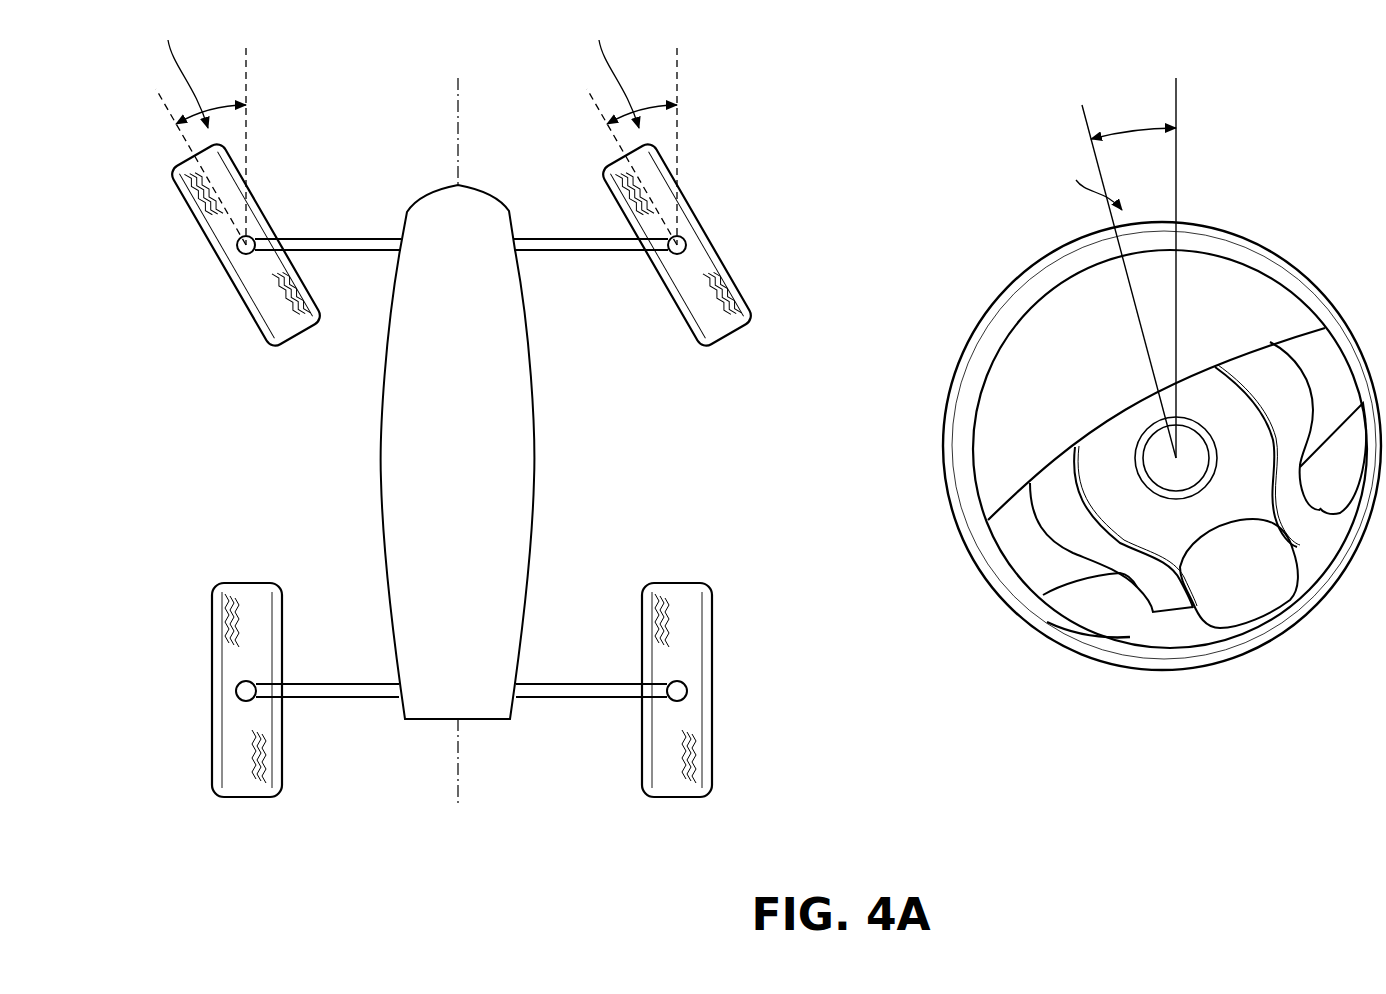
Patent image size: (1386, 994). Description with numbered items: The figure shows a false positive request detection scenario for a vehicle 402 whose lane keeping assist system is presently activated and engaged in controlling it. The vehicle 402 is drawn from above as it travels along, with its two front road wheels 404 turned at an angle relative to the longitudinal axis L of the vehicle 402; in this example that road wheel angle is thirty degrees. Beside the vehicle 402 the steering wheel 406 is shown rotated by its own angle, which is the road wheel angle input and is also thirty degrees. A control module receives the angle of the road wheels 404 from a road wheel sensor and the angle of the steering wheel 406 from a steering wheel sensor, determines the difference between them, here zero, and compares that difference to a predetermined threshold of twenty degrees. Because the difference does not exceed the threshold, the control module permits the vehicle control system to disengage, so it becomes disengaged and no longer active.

The vehicle 402 is at (126, 326).
The front road wheels 404 is at (291, 342).
The steering wheel 406 is at (1277, 262).
The longitudinal axis L is at (459, 755).